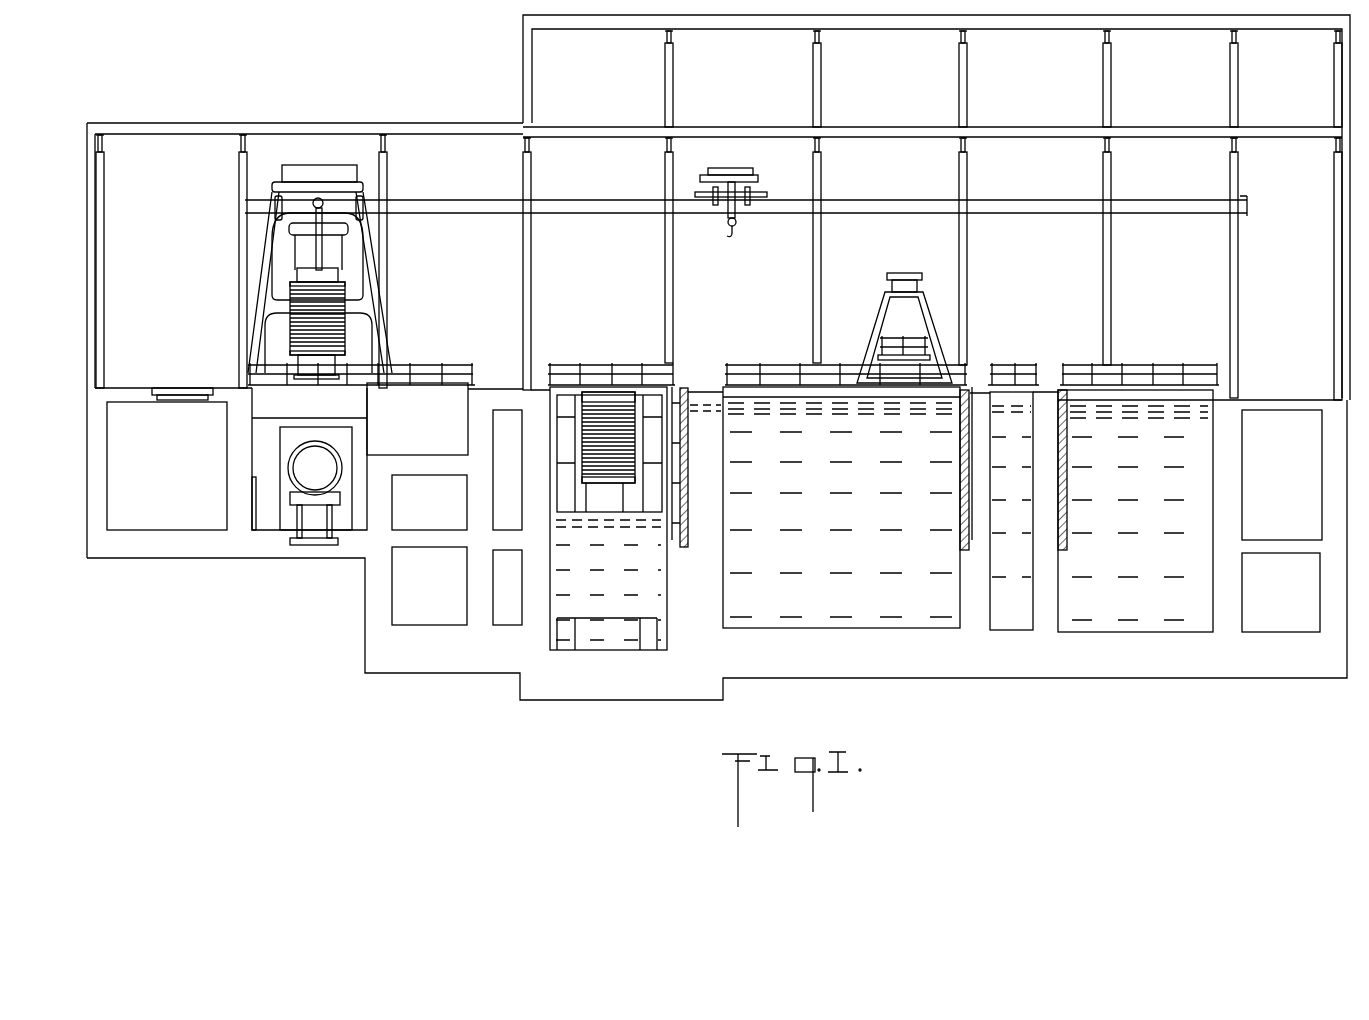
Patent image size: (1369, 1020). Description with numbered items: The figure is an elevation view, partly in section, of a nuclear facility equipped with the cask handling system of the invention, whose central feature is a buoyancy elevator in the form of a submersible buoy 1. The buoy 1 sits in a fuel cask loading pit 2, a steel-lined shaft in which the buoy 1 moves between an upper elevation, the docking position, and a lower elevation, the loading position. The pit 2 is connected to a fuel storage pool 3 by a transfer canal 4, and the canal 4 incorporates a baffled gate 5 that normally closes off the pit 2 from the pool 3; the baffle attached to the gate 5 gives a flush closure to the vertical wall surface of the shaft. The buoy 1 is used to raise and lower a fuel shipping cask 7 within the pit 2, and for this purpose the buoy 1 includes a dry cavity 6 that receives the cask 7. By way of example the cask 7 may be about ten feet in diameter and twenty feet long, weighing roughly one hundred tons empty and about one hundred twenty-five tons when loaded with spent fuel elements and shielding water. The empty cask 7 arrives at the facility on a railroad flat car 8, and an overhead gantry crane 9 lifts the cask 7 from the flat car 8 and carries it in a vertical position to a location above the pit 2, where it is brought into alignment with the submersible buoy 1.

The submersible buoy 1 is at (665, 400).
The fuel cask loading pit 2 is at (669, 594).
The fuel storage pool 3 is at (845, 620).
The transfer canal 4 is at (702, 410).
The baffled gate 5 is at (690, 455).
The dry cavity 6 is at (590, 362).
The cask 7 is at (345, 292).
The railroad flat car 8 is at (288, 503).
The overhead gantry crane 9 is at (312, 170).